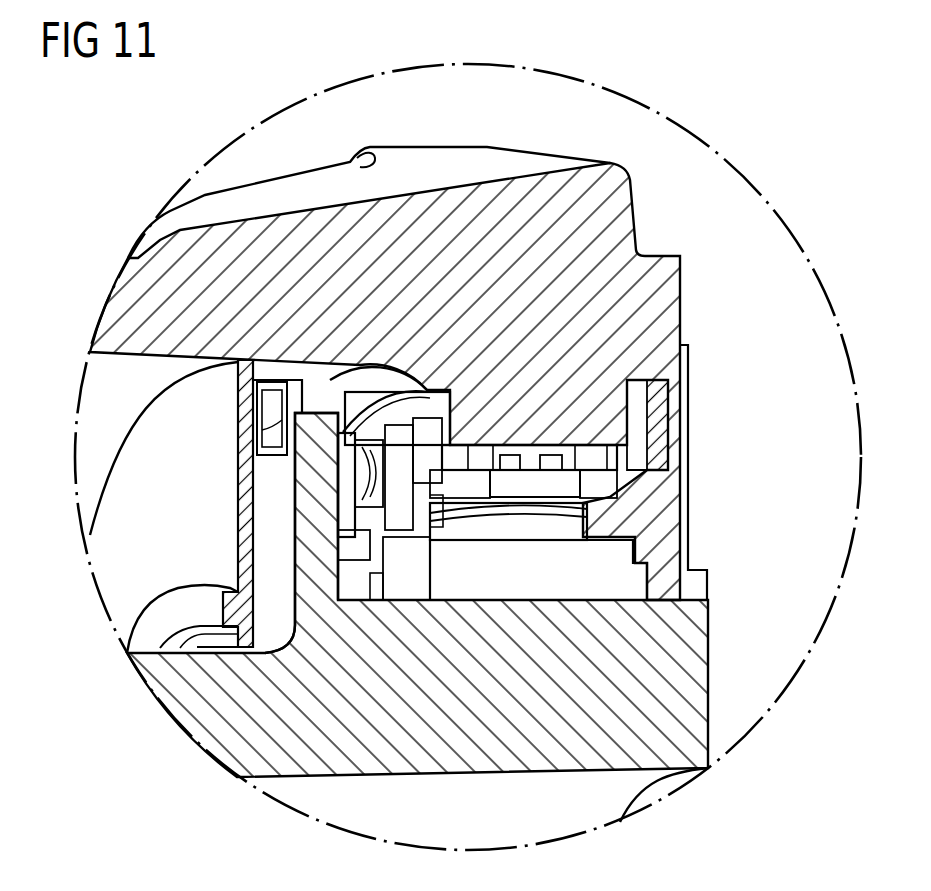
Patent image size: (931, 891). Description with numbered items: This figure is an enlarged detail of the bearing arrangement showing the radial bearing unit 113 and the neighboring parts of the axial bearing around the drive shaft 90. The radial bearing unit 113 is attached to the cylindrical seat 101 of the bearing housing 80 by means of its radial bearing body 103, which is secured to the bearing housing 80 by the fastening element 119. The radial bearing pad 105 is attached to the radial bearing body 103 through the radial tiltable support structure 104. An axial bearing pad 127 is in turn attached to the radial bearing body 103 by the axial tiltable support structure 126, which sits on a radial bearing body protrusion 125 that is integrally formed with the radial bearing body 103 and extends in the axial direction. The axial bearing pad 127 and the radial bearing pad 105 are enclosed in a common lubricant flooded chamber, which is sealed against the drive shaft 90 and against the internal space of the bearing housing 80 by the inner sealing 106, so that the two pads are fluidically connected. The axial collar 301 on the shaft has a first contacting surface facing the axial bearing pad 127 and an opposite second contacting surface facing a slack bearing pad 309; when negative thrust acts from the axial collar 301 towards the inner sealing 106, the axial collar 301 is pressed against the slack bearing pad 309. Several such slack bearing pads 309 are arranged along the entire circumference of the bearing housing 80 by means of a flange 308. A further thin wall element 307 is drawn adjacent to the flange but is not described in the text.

The bearing housing 80 is at (193, 247).
The drive shaft 90 is at (489, 745).
The cylindrical seat 101 is at (392, 383).
The radial bearing body 103 is at (612, 489).
The radial tiltable support structure 104 is at (477, 525).
The radial bearing pad 105 is at (588, 580).
The inner sealing 106 is at (160, 580).
The radial bearing unit 113 is at (662, 515).
The fastening element 119 is at (527, 485).
The radial bearing body protrusion 125 is at (440, 433).
The axial tiltable support structure 126 is at (383, 430).
The axial bearing pad 127 is at (340, 480).
The axial collar 301 is at (313, 522).
The wall 307 is at (233, 408).
The flange 308 is at (297, 377).
The slack bearing pad 309 is at (277, 388).